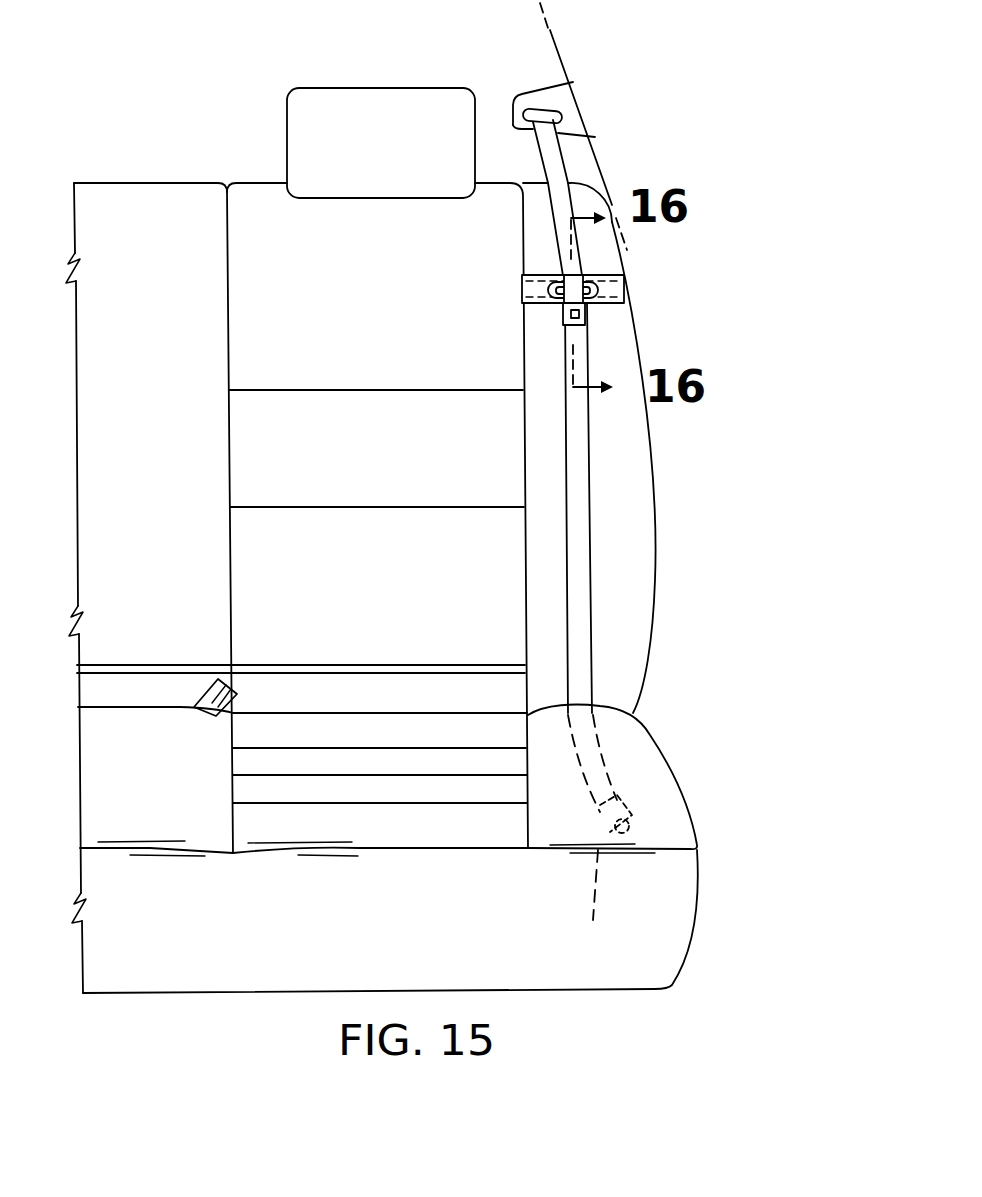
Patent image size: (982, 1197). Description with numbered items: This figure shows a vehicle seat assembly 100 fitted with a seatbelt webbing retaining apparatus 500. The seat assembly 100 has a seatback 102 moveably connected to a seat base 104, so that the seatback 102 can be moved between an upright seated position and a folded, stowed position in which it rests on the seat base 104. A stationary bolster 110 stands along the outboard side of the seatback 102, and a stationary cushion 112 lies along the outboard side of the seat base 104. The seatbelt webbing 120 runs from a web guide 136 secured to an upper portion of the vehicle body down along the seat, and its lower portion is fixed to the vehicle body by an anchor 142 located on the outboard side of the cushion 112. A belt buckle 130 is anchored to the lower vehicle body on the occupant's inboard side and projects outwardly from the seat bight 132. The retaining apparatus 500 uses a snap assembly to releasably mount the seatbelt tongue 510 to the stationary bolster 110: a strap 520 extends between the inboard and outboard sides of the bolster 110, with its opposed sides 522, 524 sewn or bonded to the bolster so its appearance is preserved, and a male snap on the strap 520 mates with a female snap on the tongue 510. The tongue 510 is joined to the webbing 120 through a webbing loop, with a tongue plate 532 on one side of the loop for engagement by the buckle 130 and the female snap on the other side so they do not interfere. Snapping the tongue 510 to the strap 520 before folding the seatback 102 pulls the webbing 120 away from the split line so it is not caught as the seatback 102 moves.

The vehicle seat assembly 100 is at (750, 413).
The seatback 102 is at (266, 202).
The seat base 104 is at (352, 820).
The stationary bolster 110 is at (637, 492).
The stationary cushion 112 is at (663, 798).
The seatbelt webbing 120 is at (591, 553).
The belt buckle 130 is at (202, 692).
The seat bight 132 is at (142, 707).
The web guide 136 is at (567, 100).
The anchor 142 is at (605, 877).
The seatbelt webbing retaining apparatus 500 is at (605, 310).
The tongue 510 is at (551, 292).
The strap 520 is at (618, 292).
The side of strap 522 is at (535, 275).
The side of strap 524 is at (540, 304).
The tongue plate 532 is at (566, 325).